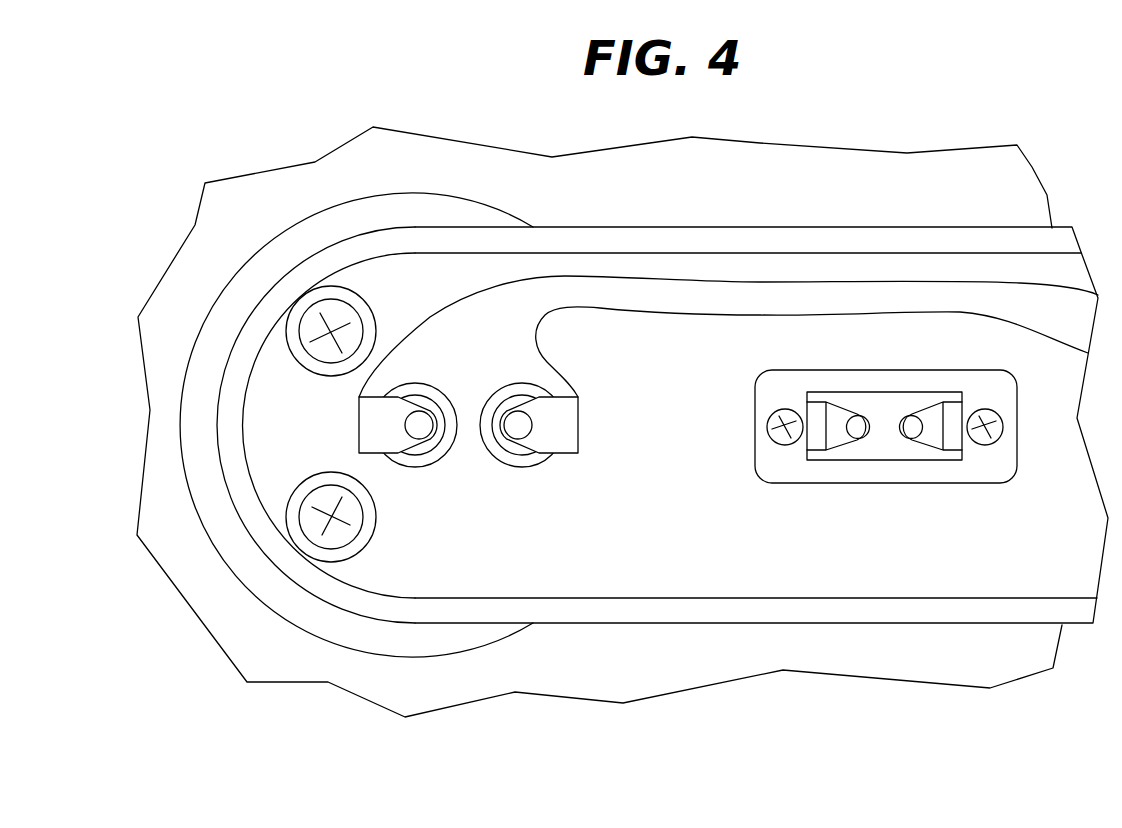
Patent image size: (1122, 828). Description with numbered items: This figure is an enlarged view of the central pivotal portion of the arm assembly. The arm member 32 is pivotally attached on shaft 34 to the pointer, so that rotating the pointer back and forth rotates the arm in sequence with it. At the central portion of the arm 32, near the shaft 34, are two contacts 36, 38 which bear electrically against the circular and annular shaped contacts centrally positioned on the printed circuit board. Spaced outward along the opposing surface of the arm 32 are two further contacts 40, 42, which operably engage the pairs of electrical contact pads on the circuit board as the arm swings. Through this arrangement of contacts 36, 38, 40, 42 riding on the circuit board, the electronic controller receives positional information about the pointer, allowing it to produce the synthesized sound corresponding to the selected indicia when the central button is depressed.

The arm member 32 is at (820, 227).
The shaft 34 is at (413, 385).
The contact 36 is at (419, 428).
The contact 38 is at (518, 428).
The contact 40 is at (858, 415).
The contact 42 is at (911, 415).